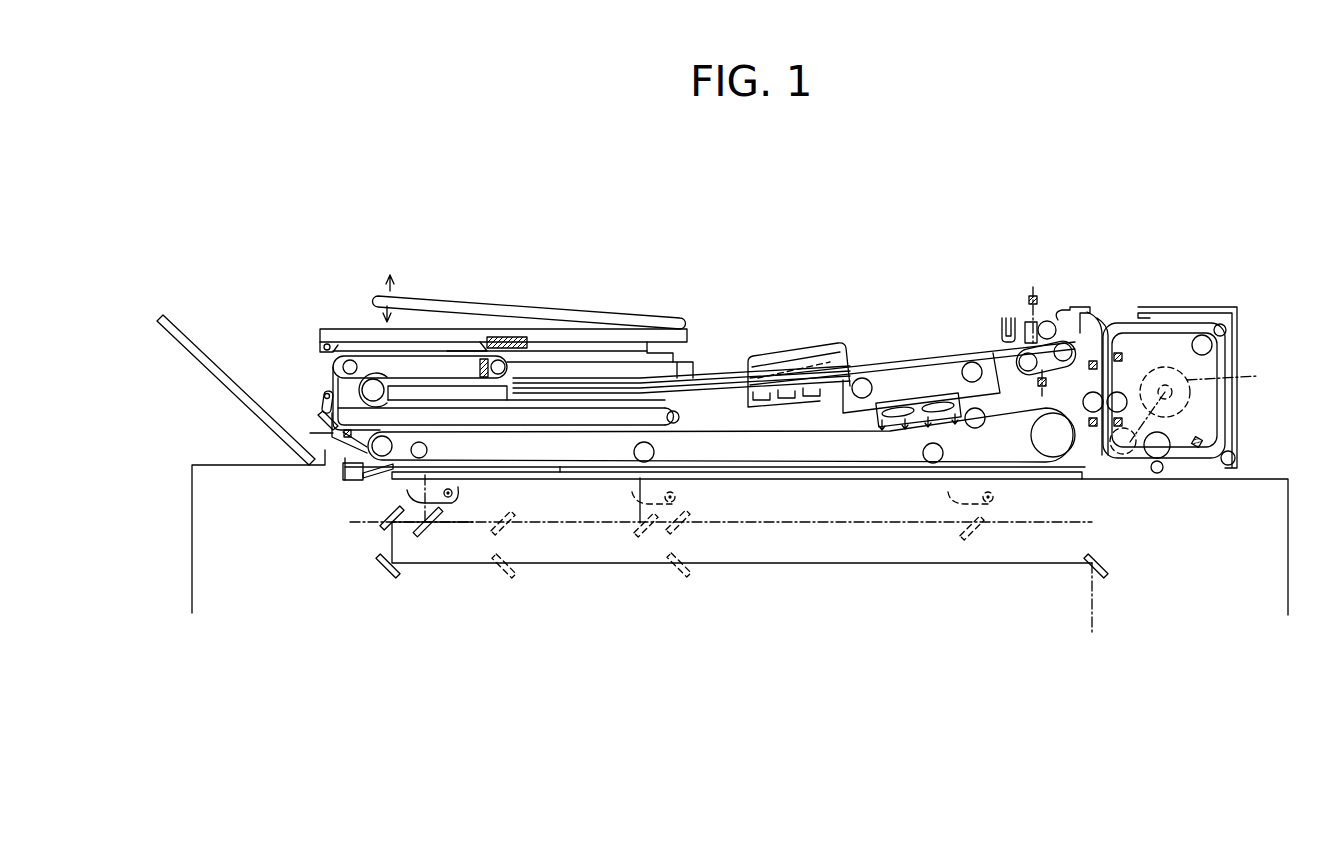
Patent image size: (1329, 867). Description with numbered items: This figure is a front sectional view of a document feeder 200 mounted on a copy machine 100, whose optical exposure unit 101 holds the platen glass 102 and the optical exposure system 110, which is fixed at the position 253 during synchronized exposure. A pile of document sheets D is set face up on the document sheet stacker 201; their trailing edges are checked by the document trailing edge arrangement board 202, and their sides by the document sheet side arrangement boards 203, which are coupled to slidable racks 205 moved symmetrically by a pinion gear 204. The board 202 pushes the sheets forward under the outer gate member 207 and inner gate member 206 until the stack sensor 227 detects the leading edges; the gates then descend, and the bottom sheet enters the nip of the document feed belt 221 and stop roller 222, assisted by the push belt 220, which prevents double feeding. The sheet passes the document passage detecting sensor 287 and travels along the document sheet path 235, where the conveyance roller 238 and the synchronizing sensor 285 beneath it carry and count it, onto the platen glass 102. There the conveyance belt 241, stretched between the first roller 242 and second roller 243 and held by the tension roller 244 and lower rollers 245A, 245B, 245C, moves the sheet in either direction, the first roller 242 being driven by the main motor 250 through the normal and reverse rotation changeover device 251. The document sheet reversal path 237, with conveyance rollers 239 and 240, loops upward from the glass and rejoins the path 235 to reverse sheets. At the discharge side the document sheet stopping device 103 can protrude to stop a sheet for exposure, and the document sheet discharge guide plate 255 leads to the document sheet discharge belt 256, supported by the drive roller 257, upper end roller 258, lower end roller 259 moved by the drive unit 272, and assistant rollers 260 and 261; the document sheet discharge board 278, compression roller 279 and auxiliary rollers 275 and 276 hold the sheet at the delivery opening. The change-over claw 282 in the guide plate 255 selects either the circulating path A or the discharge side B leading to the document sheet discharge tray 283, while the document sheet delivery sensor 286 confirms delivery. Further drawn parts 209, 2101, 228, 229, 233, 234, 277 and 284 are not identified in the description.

The copy machine 100 is at (1190, 580).
The optical exposure unit 101 is at (895, 544).
The platen glass 102 is at (560, 472).
The document sheet stopping device 103 is at (376, 471).
The optical exposure system 110 is at (448, 505).
The document feeder 200 is at (851, 228).
The document sheet stacker 201 is at (863, 378).
The document trailing edge arrangement board 202 is at (540, 378).
The document sheet side arrangement boards 203 is at (785, 353).
The pinion gear 204 is at (783, 402).
The slidable racks 205 is at (757, 402).
The inner gate member 206 is at (1040, 320).
The outer gate member 207 is at (1030, 322).
The bracket 209 is at (1082, 308).
The guide 2101 is at (1004, 318).
The push belt 220 is at (912, 352).
The document feed belt 221 is at (1108, 330).
The stop roller 222 is at (1030, 310).
The stack sensor 227 is at (1045, 321).
The roller 228 is at (972, 362).
The feed plate 229 is at (855, 370).
The roller 233 is at (850, 398).
The roller 234 is at (890, 497).
The document sheet path 235 is at (1110, 380).
The document sheet reversal path 237 is at (1235, 462).
The conveyance roller 238 is at (1097, 445).
The conveyance roller 239 is at (1165, 452).
The conveyance roller 240 is at (1212, 345).
The conveyance belt 241 is at (1045, 458).
The first roller 242 is at (1072, 460).
The second roller 243 is at (366, 462).
The tension roller 244 is at (997, 460).
The roller 245A is at (960, 510).
The roller 245B is at (645, 527).
The roller 245C is at (425, 452).
The main motor 250 is at (1204, 390).
The normal and reverse rotation changeover device 251 is at (1128, 455).
The position 253 is at (644, 462).
The document sheet discharge guide plate 255 is at (323, 452).
The document sheet discharge belt 256 is at (342, 363).
The drive roller 257 is at (353, 363).
The upper end roller 258 is at (518, 358).
The lower end roller 259 is at (666, 417).
The assistant roller 260 is at (322, 433).
The assistant roller 261 is at (336, 367).
The drive unit 272 is at (373, 382).
The auxiliary roller 275 is at (325, 427).
The auxiliary roller 276 is at (325, 340).
The cover 277 is at (655, 328).
The document sheet discharge board 278 is at (478, 362).
The compression roller 279 is at (489, 337).
The change-over claw 282 is at (324, 395).
The document sheet discharge tray 283 is at (166, 318).
The cover end 284 is at (640, 314).
The synchronizing sensor 285 is at (1123, 422).
The document sheet delivery sensor 286 is at (453, 332).
The document passage detecting sensor 287 is at (1120, 355).
The document circulating discharge side path A is at (337, 378).
The document discharge side B is at (322, 412).
The document sheets D is at (725, 378).